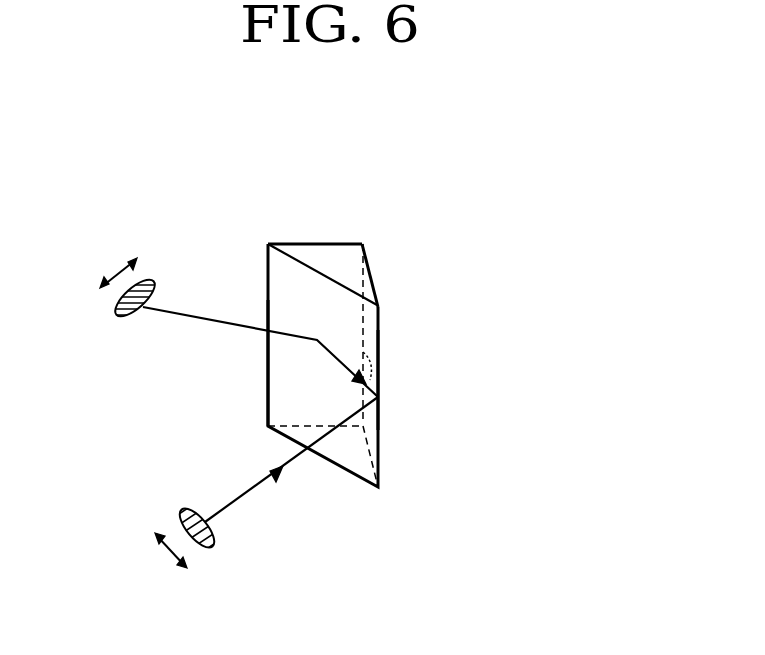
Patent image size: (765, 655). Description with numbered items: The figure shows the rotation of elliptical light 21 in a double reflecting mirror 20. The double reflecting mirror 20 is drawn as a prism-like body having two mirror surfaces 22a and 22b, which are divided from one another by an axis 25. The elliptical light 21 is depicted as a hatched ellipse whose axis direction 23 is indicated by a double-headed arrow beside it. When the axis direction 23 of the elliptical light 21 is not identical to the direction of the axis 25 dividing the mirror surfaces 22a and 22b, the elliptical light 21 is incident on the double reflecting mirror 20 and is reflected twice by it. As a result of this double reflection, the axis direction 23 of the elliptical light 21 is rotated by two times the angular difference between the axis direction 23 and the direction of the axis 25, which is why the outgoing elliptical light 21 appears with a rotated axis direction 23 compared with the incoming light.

The double reflecting mirror 20 is at (309, 308).
The elliptical light 21 is at (155, 280).
The mirror surface 22a is at (367, 382).
The mirror surface 22b is at (280, 384).
The axis direction 23 is at (120, 268).
The axis 25 is at (365, 284).